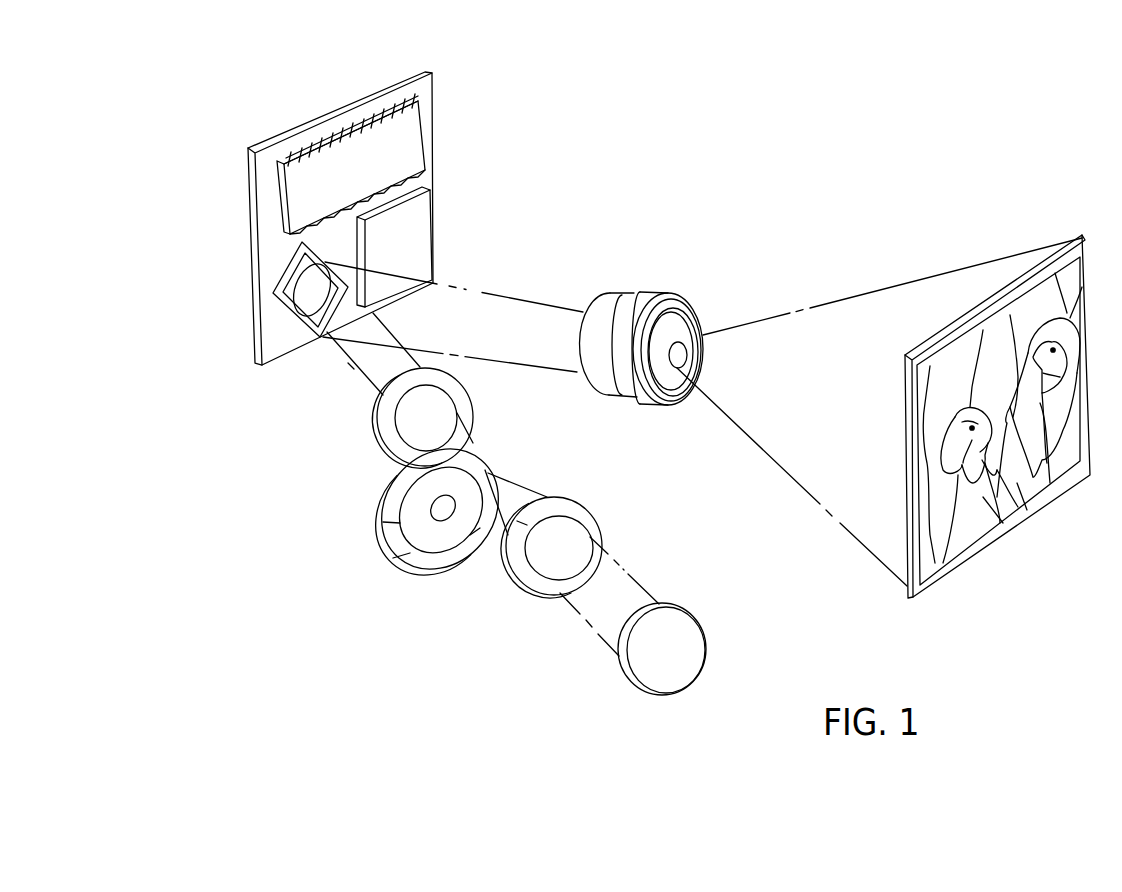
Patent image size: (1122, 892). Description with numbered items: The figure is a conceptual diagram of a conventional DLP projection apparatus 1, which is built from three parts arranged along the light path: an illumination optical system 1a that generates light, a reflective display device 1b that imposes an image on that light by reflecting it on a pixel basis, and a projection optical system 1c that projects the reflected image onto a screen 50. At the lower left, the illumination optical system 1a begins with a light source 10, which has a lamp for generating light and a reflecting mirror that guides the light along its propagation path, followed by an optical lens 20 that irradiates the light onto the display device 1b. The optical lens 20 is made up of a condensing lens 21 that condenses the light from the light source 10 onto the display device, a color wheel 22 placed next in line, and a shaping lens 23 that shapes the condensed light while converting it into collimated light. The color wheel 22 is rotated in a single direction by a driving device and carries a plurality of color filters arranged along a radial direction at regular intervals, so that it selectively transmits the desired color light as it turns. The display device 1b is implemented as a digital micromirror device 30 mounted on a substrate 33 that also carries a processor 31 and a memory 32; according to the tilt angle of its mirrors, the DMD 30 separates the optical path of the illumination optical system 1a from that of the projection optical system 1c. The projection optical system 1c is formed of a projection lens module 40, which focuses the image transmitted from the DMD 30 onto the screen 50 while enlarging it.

The projection apparatus 1 is at (903, 115).
The illumination optical system 1a is at (363, 700).
The reflective display device 1b is at (213, 137).
The projection optical system 1c is at (748, 270).
The light source 10 is at (648, 675).
The optical lens 20 is at (338, 558).
The condensing lens 21 is at (532, 578).
The color wheel 22 is at (402, 558).
The shaping lens 23 is at (390, 450).
The digital micromirror device (DMD) 30 is at (290, 296).
The processor 31 is at (415, 137).
The memory 32 is at (423, 230).
The substrate 33 is at (345, 106).
The projection lens module 40 is at (653, 297).
The screen 50 is at (1003, 533).